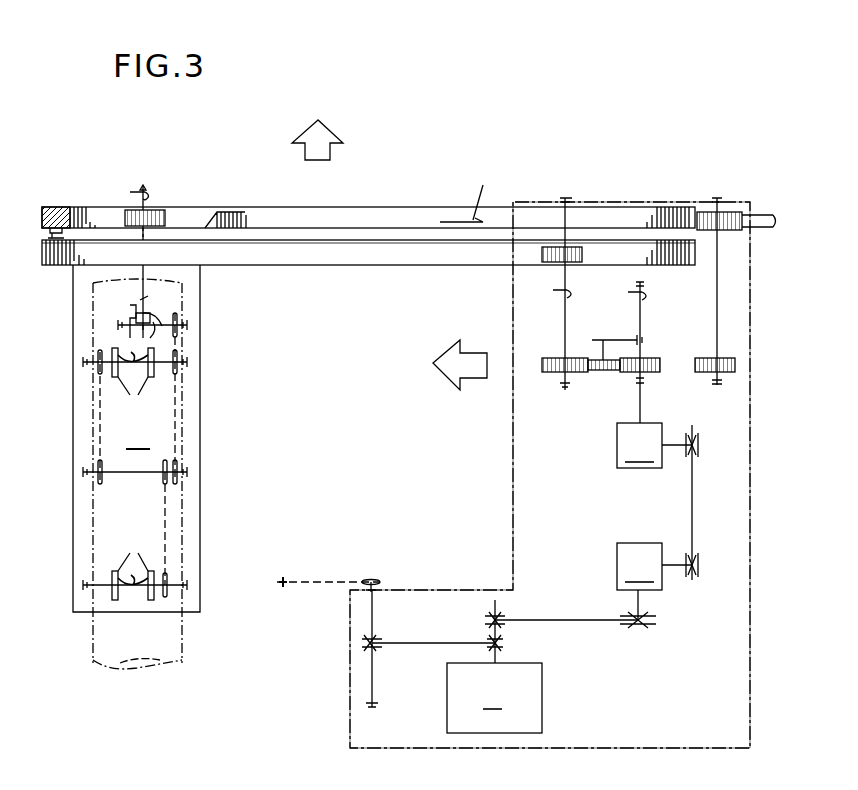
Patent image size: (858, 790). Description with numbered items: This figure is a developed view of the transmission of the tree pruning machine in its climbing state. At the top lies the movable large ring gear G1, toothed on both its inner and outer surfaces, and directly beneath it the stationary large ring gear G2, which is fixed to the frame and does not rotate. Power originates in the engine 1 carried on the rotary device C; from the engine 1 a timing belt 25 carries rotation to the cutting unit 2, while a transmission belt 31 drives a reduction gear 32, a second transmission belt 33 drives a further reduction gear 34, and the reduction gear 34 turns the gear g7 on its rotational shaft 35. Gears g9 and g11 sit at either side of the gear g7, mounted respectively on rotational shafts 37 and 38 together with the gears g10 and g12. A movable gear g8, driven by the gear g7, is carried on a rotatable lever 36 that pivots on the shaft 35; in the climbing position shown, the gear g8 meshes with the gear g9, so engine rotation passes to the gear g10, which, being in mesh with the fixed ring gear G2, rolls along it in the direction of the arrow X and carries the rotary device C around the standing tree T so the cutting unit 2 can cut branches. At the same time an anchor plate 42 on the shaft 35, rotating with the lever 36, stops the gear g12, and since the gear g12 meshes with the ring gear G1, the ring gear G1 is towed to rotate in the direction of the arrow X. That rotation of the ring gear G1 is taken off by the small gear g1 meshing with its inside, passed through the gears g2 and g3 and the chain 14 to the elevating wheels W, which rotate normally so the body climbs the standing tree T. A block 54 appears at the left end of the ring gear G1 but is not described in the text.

The stop block 54 is at (62, 207).
The movable large ring gear G1 is at (408, 207).
The stationary large ring gear G2 is at (335, 265).
The arrow indicating direction of rotation X is at (392, 255).
The small gear g1 is at (160, 207).
The gear g2 is at (158, 318).
The bevel gear g3 is at (130, 325).
The chain 14 is at (98, 415).
The elevating wheels W is at (139, 436).
The standing tree T is at (182, 630).
The rotary device C is at (750, 578).
The gear g10 is at (540, 255).
The rotational shaft 37 is at (560, 325).
The gear g9 is at (548, 372).
The movable gear g8 is at (592, 372).
The rotatable lever 36 is at (617, 340).
The gear g7 is at (630, 372).
The rotational shaft 35 is at (645, 321).
The gear g11 is at (735, 370).
The rotational shaft 38 is at (720, 325).
The gear g12 is at (735, 212).
The anchor plate 42 is at (758, 213).
The reduction gear 34 is at (639, 445).
The reduction gear 32 is at (639, 566).
The transmission belt 33 is at (696, 498).
The transmission belt 31 is at (573, 622).
The engine 1 is at (494, 698).
The timing belt 25 is at (325, 580).
The cutting unit 2 is at (276, 584).